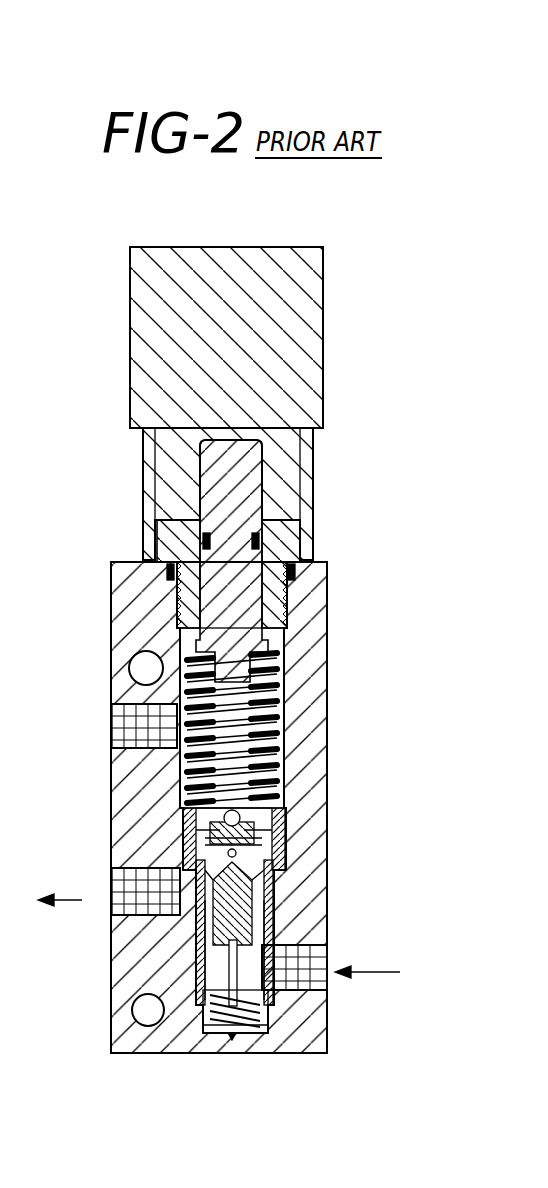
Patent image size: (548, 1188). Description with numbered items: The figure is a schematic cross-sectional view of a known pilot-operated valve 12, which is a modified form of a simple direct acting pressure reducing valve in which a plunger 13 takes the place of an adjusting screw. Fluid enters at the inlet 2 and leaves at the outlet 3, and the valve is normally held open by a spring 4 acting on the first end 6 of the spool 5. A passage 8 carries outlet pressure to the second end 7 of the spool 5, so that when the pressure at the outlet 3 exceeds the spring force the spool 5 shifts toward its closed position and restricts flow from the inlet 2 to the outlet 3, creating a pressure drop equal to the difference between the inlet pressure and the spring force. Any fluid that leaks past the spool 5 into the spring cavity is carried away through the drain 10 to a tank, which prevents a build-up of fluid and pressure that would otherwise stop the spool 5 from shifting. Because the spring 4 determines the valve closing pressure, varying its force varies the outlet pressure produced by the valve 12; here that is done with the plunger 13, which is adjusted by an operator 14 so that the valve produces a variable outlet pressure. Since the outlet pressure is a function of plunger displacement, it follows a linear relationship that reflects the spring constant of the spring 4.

The operator 14 is at (320, 297).
The plunger 13 is at (243, 598).
The pilot-operated valve 12 is at (92, 607).
The drain 10 is at (120, 725).
The spring 4 is at (283, 690).
The first end of the spool 6 is at (268, 815).
The outlet 3 is at (125, 880).
The spool 5 is at (255, 897).
The inlet 2 is at (305, 960).
The passage 8 is at (218, 952).
The second end of the spool 7 is at (268, 1012).